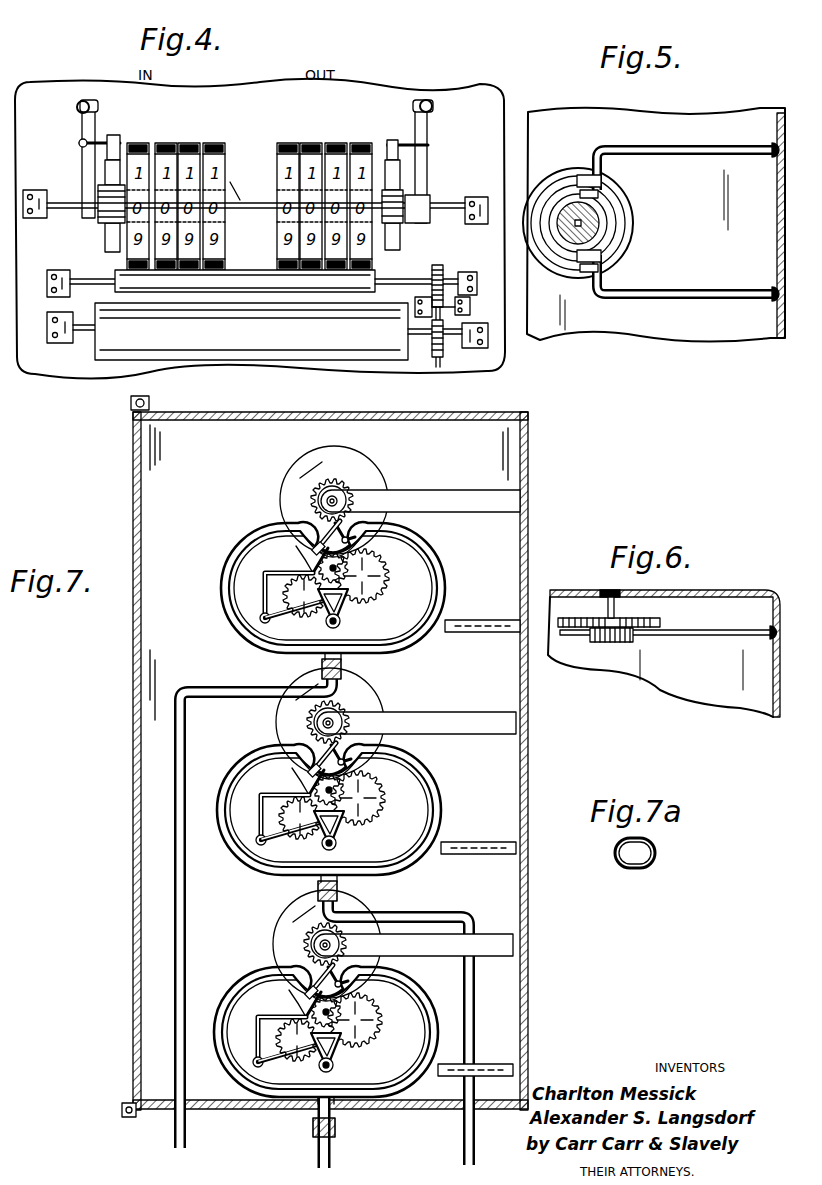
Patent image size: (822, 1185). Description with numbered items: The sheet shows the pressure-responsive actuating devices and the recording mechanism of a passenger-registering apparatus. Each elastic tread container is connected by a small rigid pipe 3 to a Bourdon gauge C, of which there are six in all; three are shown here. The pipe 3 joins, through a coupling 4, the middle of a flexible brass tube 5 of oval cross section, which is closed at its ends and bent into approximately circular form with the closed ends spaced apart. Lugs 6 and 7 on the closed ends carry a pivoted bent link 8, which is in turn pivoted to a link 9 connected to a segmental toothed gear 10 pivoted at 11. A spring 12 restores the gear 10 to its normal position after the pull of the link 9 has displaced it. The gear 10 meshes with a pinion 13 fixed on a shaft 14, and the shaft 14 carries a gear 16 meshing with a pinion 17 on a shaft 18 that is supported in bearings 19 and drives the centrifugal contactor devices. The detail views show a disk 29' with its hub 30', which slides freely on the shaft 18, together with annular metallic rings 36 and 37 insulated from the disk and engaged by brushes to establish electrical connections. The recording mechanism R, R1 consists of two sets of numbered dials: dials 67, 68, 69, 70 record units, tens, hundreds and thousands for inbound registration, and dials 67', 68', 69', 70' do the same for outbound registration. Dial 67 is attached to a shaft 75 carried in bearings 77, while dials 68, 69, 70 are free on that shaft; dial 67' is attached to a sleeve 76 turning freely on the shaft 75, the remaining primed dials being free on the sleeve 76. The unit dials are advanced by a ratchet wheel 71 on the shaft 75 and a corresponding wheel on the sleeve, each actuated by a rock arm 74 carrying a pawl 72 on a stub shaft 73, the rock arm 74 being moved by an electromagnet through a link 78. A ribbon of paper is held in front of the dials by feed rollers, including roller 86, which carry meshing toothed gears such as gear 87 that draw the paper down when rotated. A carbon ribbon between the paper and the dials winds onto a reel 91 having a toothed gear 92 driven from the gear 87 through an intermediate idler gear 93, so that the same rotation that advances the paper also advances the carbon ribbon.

In FIG. 7, the rigid pipe 3 is at (174, 914).
In FIG. 7, the coupling 4 is at (344, 672).
In FIG. 7A, the flexible brass tube 5 is at (612, 858).
In FIG. 7, the flexible brass tube 5 is at (248, 644).
In FIG. 7, the Bourdon gauge C is at (236, 590).
In FIG. 7, the lug 6 is at (312, 504).
In FIG. 7, the lug 7 is at (290, 530).
In FIG. 7, the bent link 8 is at (263, 594).
In FIG. 7, the link 9 is at (300, 610).
In FIG. 7, the segmental toothed gear 10 is at (296, 598).
In FIG. 7, the pivot 11 is at (325, 628).
In FIG. 7, the spring 12 is at (345, 615).
In FIG. 7, the pinion 13 is at (350, 568).
In FIG. 7, the shaft 14 is at (300, 560).
In FIG. 7, the gear 16 is at (380, 592).
In FIG. 7, the pinion 17 is at (350, 485).
In FIG. 5, the shaft 18 is at (563, 195).
In FIG. 6, the shaft 18 is at (600, 618).
In FIG. 7, the shaft 18 is at (340, 501).
In FIG. 6, the bearings 19 is at (618, 608).
In FIG. 7, the bearings 19 is at (318, 498).
In FIG. 5, the disk 29' is at (609, 223).
In FIG. 6, the disk 29' is at (668, 623).
In FIG. 5, the hub portion 30' is at (610, 207).
In FIG. 6, the hub portion 30' is at (601, 670).
In FIG. 5, the annular metallic ring 36 is at (618, 210).
In FIG. 5, the annular metallic ring 37 is at (605, 240).
In FIG. 4, the dial 67 is at (221, 192).
In FIG. 4, the dial 68 is at (194, 185).
In FIG. 4, the dial 69 is at (156, 180).
In FIG. 4, the dial 70 is at (138, 192).
In FIG. 4, the dial 67' is at (372, 193).
In FIG. 4, the dial 68' is at (329, 183).
In FIG. 4, the dial 69' is at (302, 189).
In FIG. 4, the dial 70' is at (267, 206).
In FIG. 4, the recording mechanism R is at (172, 143).
In FIG. 4, the recording mechanism R1 is at (330, 135).
In FIG. 4, the ratchet wheel 71 is at (98, 240).
In FIG. 4, the pawl 72 is at (112, 135).
In FIG. 4, the stub shaft 73 is at (100, 146).
In FIG. 4, the rock arm 74 is at (82, 130).
In FIG. 4, the shaft 75 is at (248, 212).
In FIG. 4, the sleeve 76 is at (242, 189).
In FIG. 4, the bearings 77 is at (35, 190).
In FIG. 4, the link 78 is at (78, 105).
In FIG. 4, the feed roller 86 is at (150, 352).
In FIG. 4, the toothed gear 87 is at (444, 362).
In FIG. 4, the reel 91 is at (118, 273).
In FIG. 4, the toothed gear 92 is at (446, 268).
In FIG. 4, the idler gear 93 is at (470, 314).